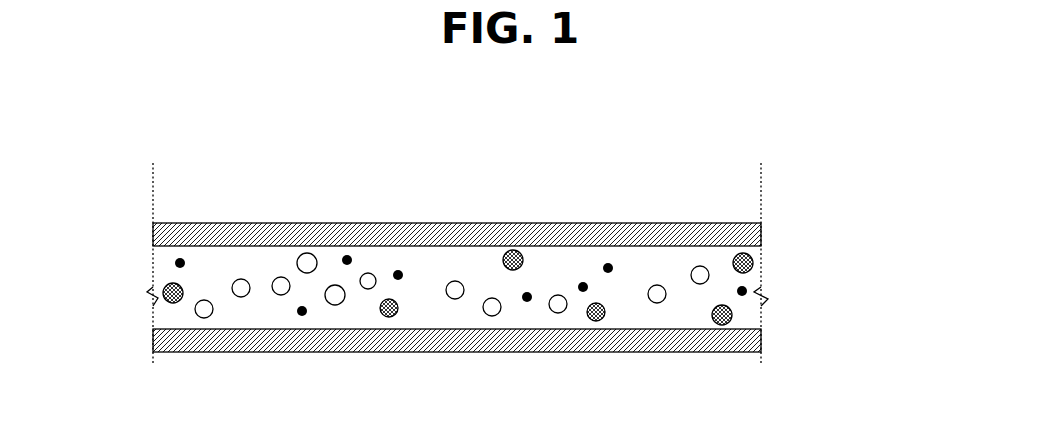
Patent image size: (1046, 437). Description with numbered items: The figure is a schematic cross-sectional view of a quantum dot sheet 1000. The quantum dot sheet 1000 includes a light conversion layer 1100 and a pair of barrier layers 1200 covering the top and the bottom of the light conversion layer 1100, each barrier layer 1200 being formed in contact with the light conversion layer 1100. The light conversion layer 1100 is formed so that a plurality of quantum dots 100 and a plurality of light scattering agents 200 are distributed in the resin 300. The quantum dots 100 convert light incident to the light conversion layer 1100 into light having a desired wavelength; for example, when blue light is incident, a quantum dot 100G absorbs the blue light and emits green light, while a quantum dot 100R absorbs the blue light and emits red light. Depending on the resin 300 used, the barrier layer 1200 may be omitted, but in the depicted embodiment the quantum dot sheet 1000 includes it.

The quantum dot sheet 1000 is at (198, 99).
The light conversion layer 1100 is at (143, 247).
The barrier layer 1200 is at (747, 237).
The quantum dot 100 is at (483, 170).
The quantum dot emitting green light 100G is at (399, 270).
The quantum dot emitting red light 100R is at (393, 300).
The light scattering agent 200 is at (205, 300).
The resin 300 is at (632, 260).